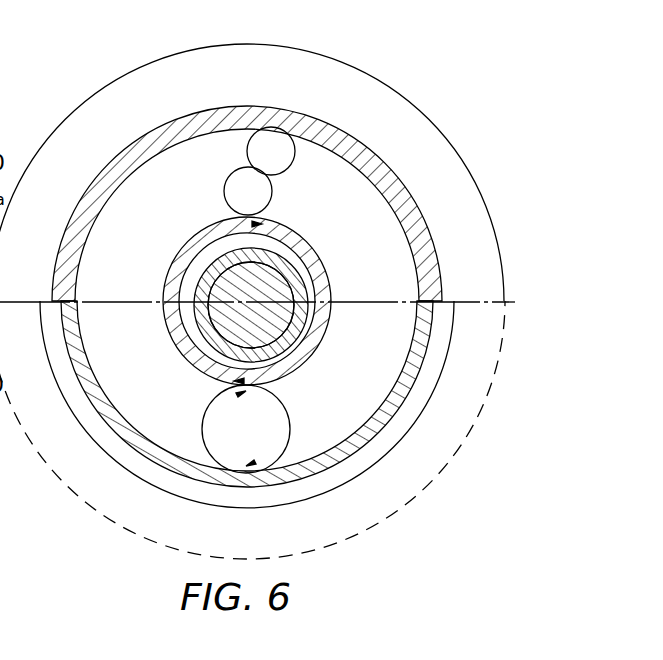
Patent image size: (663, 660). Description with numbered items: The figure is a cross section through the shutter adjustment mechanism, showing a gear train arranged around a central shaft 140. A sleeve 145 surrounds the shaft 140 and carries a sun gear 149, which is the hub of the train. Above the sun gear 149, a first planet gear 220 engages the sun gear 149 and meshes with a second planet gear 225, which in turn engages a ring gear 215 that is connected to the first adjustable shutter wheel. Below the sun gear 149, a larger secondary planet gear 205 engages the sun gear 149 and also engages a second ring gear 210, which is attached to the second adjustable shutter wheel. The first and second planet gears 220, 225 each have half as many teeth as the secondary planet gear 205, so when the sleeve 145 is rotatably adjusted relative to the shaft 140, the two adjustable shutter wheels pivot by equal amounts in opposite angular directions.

The shaft 140 is at (272, 297).
The sleeve 145 is at (198, 353).
The sun gear 149 is at (201, 231).
The secondary planet gear 205 is at (222, 447).
The second ring gear 210 is at (118, 432).
The ring gear 215 is at (166, 125).
The first planet gear 220 is at (232, 186).
The second planet gear 225 is at (268, 148).